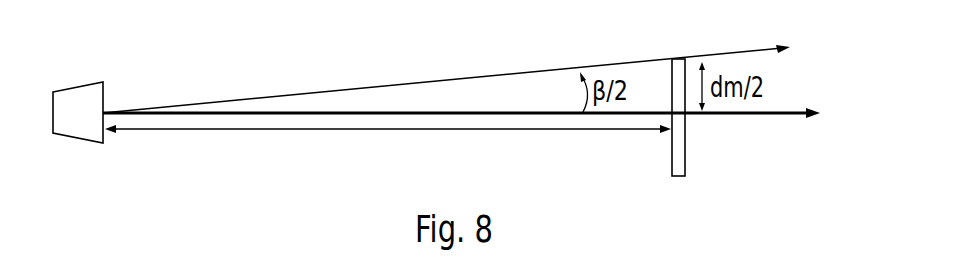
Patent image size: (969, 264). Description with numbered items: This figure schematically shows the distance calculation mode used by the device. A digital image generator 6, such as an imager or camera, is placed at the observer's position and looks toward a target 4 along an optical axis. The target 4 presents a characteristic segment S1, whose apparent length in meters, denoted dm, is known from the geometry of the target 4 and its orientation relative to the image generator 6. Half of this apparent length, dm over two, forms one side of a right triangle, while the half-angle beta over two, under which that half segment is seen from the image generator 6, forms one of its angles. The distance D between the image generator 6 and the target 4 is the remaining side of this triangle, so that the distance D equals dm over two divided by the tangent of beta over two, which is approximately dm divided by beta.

The digital image generator 6 is at (73, 88).
The target 4 is at (692, 192).
The distance D is at (365, 130).
The characteristic segment S1 is at (685, 138).